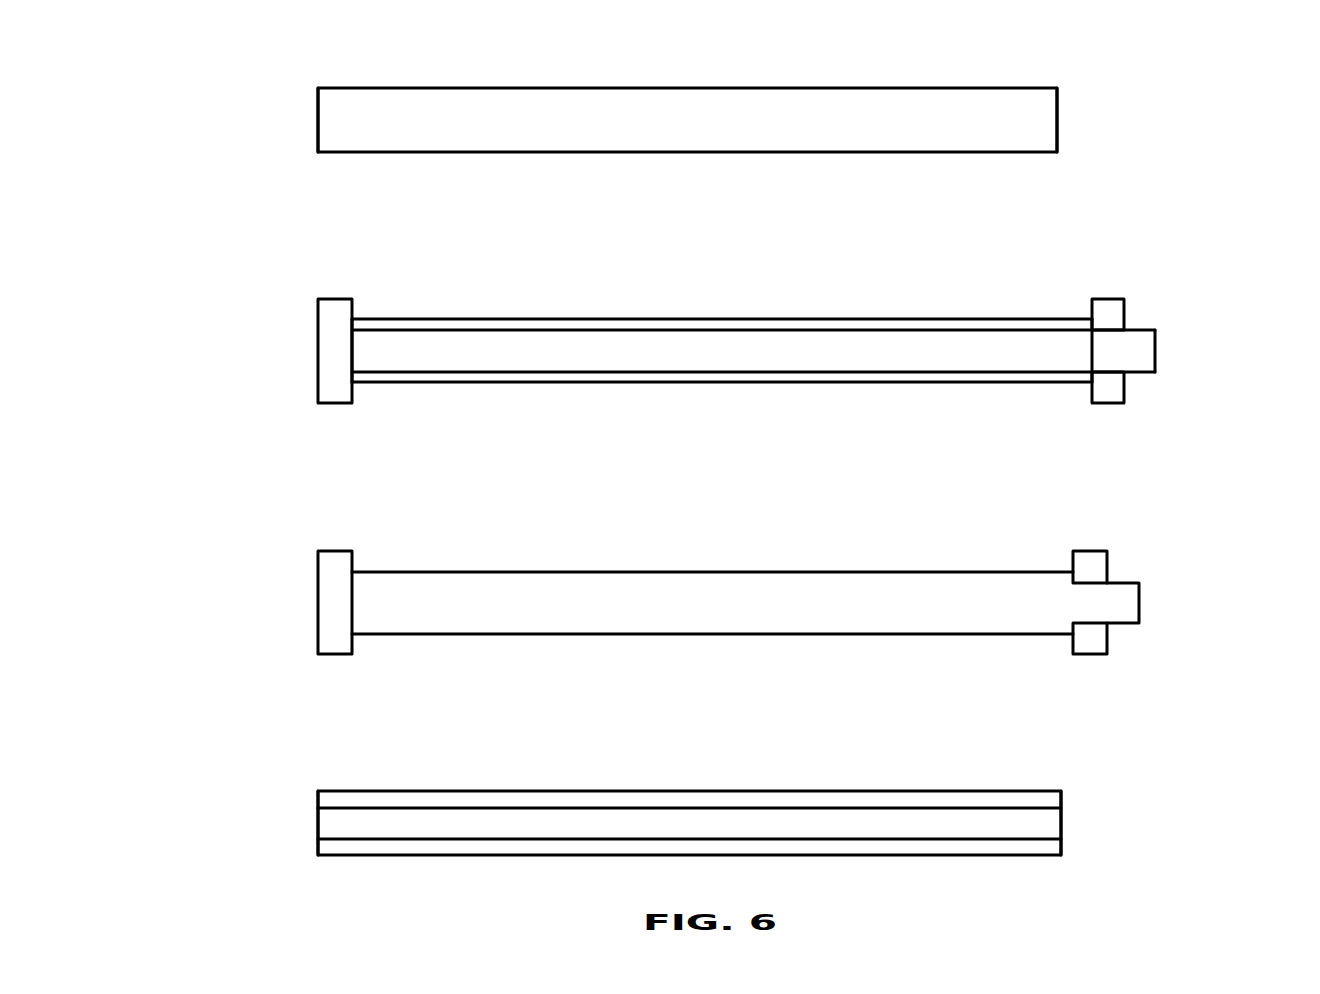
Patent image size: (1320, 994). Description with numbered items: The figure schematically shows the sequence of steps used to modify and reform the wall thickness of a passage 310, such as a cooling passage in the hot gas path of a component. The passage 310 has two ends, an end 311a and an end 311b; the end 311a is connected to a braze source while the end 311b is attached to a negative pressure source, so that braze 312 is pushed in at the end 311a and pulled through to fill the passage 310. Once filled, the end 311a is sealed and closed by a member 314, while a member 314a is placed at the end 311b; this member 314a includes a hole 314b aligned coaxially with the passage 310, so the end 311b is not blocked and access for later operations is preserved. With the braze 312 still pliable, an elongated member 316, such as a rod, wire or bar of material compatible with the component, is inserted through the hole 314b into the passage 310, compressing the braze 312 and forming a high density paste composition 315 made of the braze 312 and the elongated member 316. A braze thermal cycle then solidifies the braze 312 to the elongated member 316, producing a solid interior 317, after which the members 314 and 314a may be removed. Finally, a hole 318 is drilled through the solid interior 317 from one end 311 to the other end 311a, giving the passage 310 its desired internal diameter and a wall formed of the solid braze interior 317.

The passage 310 is at (1002, 126).
The end 311 is at (318, 846).
The end 311a is at (318, 120).
The end 311b is at (1057, 120).
The braze 312 is at (625, 128).
The member 314 is at (318, 337).
The member 314a is at (1126, 395).
The hole 314b is at (1157, 363).
The high density paste composition 315 is at (588, 364).
The elongated member 316 is at (785, 364).
The solid interior 317 is at (793, 604).
The hole 318 is at (890, 825).